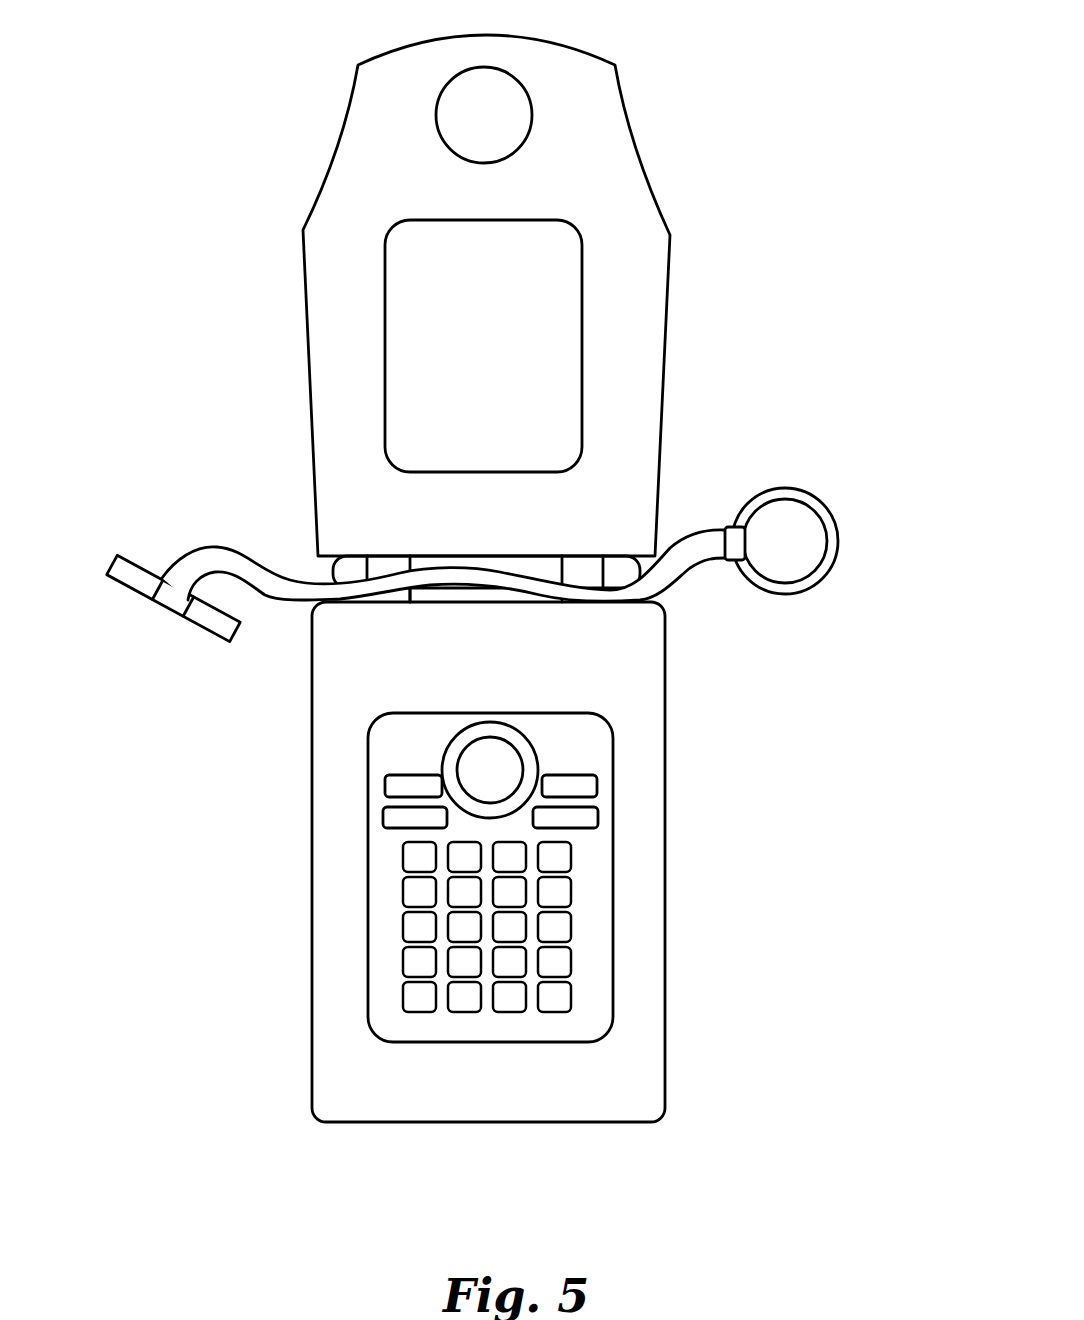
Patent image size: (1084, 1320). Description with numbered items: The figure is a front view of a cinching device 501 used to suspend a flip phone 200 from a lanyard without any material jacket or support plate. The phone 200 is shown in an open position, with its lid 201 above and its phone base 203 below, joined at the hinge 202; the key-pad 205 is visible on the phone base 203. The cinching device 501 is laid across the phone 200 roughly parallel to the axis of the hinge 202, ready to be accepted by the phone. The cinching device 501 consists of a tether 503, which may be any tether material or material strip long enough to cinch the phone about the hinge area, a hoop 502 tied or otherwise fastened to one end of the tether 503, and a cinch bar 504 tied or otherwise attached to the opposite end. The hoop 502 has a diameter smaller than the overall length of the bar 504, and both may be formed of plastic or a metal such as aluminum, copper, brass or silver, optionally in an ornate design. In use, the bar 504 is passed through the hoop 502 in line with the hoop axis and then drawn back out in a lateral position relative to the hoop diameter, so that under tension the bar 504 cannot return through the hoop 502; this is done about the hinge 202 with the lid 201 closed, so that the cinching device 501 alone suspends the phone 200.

The phone 200 is at (509, 578).
The lid 201 is at (310, 360).
The hinge 202 is at (490, 595).
The phone base 203 is at (312, 648).
The key-pad 205 is at (612, 927).
The cinching device 501 is at (504, 576).
The hoop 502 is at (835, 518).
The tether 503 is at (275, 570).
The cinch bar 504 is at (218, 637).